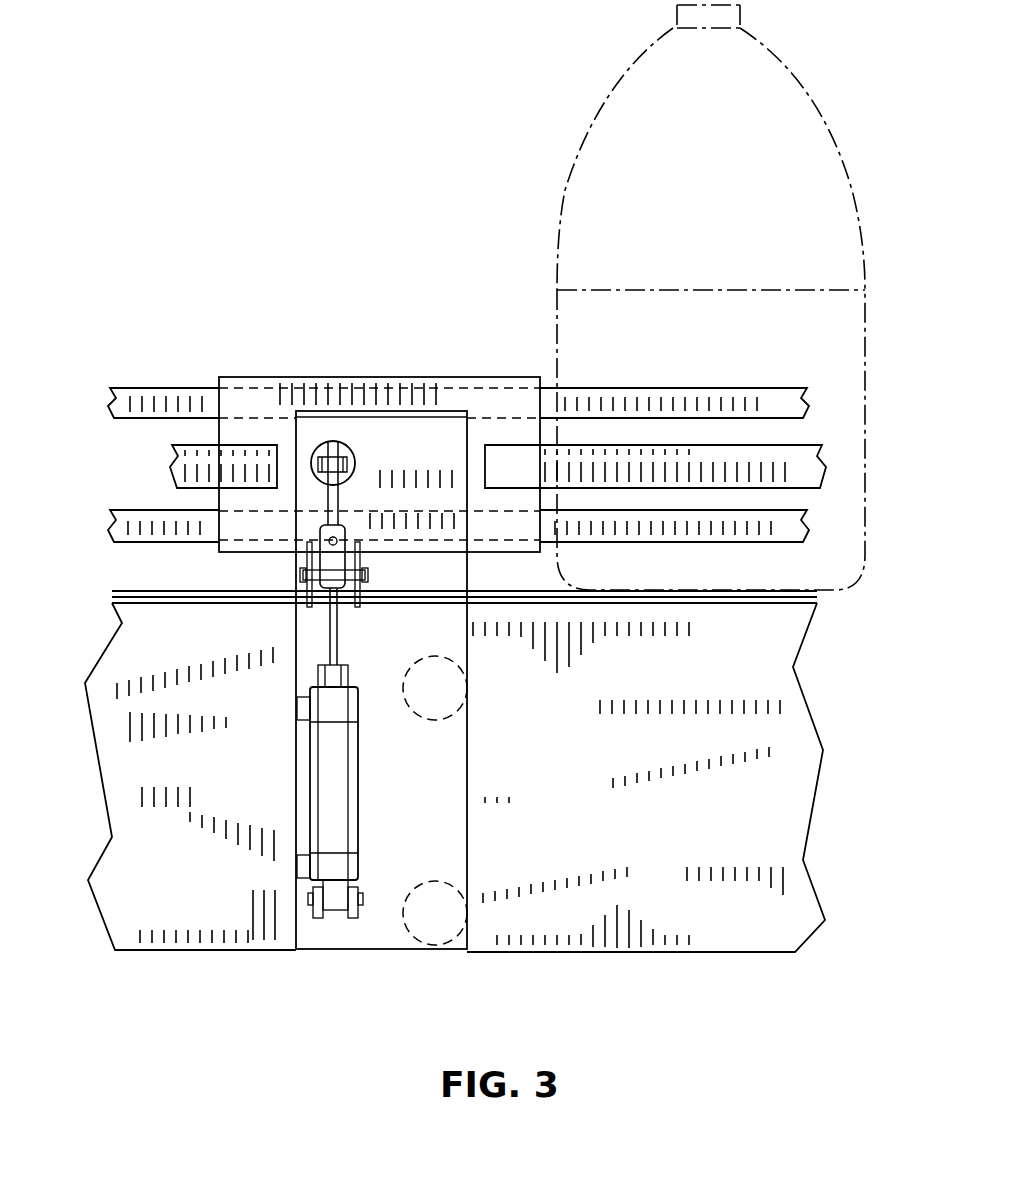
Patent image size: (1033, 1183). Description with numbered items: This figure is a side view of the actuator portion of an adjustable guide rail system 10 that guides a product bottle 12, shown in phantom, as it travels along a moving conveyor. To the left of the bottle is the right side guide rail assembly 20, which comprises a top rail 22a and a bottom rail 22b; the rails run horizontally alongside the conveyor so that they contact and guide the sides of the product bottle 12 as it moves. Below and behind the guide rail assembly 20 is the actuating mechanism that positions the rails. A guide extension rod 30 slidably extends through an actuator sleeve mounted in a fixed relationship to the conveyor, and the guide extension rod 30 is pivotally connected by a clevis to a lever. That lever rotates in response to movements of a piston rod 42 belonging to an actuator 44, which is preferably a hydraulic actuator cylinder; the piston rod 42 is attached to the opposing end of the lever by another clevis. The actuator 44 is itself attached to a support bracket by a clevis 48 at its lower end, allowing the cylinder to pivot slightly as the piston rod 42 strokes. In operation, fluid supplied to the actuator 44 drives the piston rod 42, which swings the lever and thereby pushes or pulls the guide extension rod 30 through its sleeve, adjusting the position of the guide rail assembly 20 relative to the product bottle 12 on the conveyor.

The adjustable guide rail system 10 is at (188, 206).
The product bottle 12 is at (846, 185).
The right side guide rail assembly 20 is at (442, 350).
The top rail 22a is at (140, 410).
The bottom rail 22b is at (163, 518).
The guide extension rod 30 is at (348, 452).
The piston rod 42 is at (337, 610).
The actuator 44 is at (340, 800).
The clevis 48 is at (357, 905).